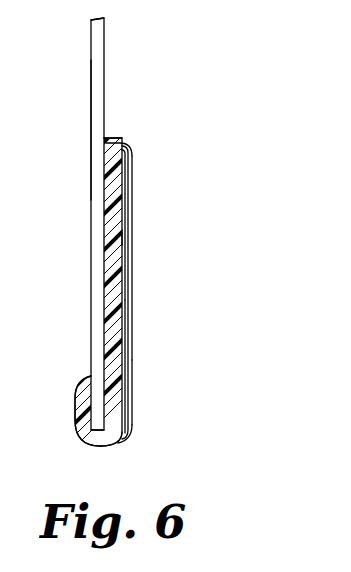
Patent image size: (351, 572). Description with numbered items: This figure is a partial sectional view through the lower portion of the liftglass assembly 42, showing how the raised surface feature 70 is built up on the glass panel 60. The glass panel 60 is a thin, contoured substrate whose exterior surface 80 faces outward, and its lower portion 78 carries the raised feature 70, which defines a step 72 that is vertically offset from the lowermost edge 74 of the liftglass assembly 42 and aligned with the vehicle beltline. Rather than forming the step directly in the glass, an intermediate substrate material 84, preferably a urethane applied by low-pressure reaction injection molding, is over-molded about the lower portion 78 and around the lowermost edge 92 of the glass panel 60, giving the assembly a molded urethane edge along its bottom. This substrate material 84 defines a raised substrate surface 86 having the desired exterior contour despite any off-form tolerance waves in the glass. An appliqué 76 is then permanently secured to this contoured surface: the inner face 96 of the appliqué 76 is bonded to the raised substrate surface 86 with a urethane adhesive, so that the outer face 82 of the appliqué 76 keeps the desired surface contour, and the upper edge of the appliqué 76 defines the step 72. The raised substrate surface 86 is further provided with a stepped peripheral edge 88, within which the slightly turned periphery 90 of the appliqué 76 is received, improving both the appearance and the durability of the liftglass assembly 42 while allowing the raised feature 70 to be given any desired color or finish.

The liftglass assembly 42 is at (226, 45).
The glass panel 60 is at (91, 118).
The raised surface feature 70 is at (145, 262).
The step 72 is at (130, 134).
The lowermost edge of the liftglass assembly 74 is at (90, 446).
The appliqué 76 is at (128, 328).
The lower portion of the glass panel 78 is at (120, 280).
The exterior surface of the glass panel 80 is at (104, 50).
The outer face of the appliqué 82 is at (133, 378).
The intermediate substrate material 84 is at (103, 292).
The raised substrate surface 86 is at (128, 190).
The stepped peripheral edge 88 is at (125, 441).
The turned periphery of the appliqué 90 is at (110, 152).
The lowermost edge of the glass panel 92 is at (80, 425).
The inner face of the appliqué 96 is at (110, 236).